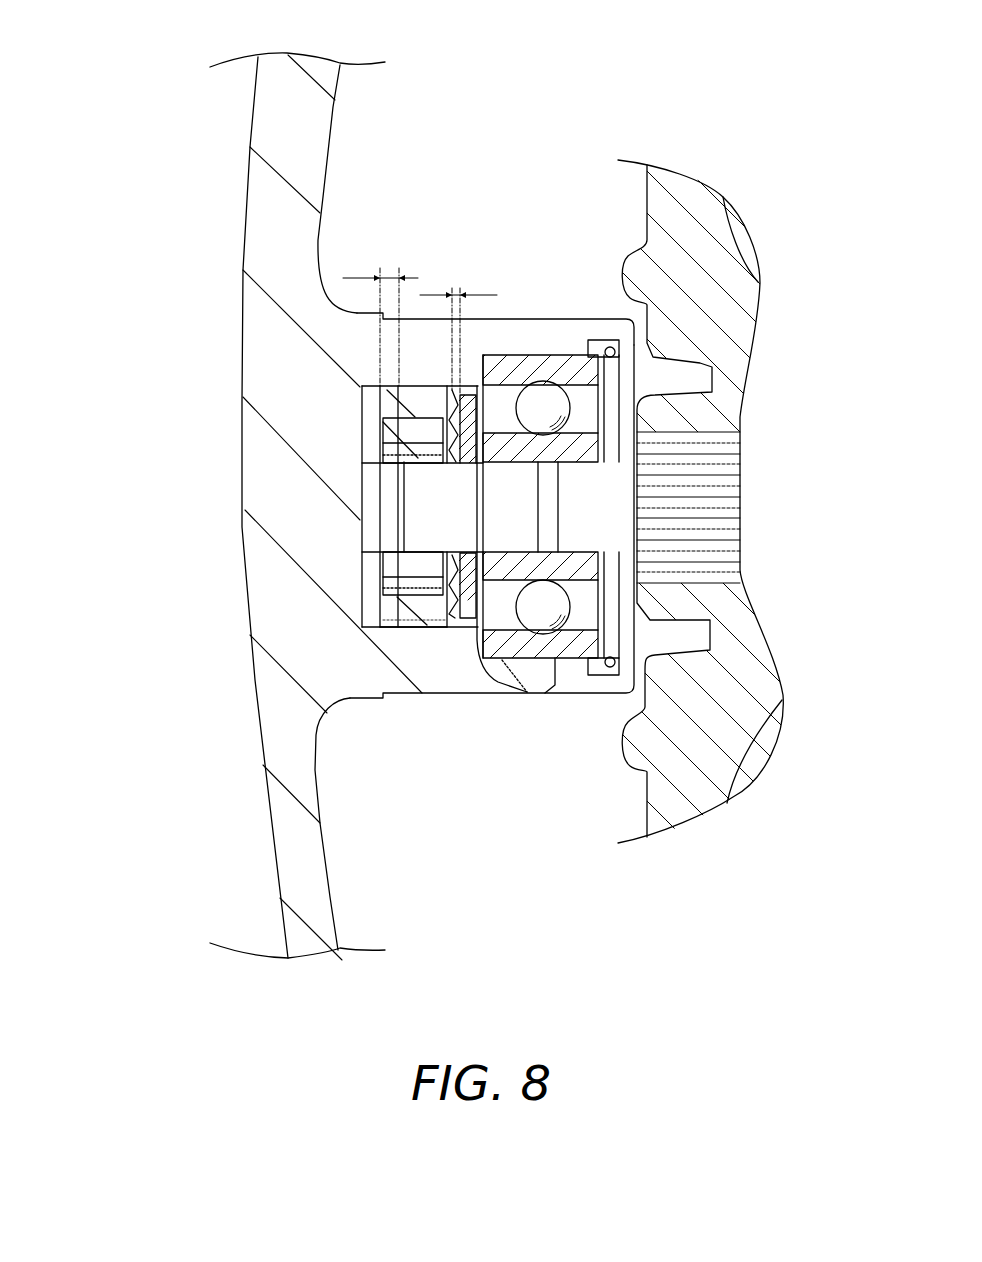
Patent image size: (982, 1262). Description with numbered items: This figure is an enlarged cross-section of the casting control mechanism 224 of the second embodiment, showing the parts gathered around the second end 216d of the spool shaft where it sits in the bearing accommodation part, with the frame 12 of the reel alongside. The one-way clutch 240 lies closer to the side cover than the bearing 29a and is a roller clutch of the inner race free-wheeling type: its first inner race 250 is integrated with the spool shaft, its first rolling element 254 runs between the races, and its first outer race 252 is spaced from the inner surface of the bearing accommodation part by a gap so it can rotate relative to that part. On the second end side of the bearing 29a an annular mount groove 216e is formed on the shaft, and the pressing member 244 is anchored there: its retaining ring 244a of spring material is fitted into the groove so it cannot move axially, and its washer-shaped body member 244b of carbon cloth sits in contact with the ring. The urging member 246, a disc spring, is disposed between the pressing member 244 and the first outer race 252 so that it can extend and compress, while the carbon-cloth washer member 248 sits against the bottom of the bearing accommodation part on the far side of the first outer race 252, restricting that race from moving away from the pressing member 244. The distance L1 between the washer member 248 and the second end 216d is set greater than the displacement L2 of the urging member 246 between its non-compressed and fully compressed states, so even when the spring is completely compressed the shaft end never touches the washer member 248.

The bicycle frame 12 is at (690, 788).
The bearing 29a is at (547, 353).
The second end 216d is at (397, 508).
The mount groove 216e is at (478, 487).
The casting control mechanism 224 is at (440, 645).
The one-way clutch 240 is at (405, 632).
The pressing member 244 is at (640, 805).
The retaining ring 244a is at (527, 690).
The body member 244b is at (465, 627).
The urging member 246 is at (427, 600).
The washer member 248 is at (372, 382).
The first inner race 250 is at (383, 420).
The first outer race 252 is at (383, 603).
The first rolling element 254 is at (383, 568).
The distance L1 is at (380, 306).
The displacement L2 is at (458, 323).